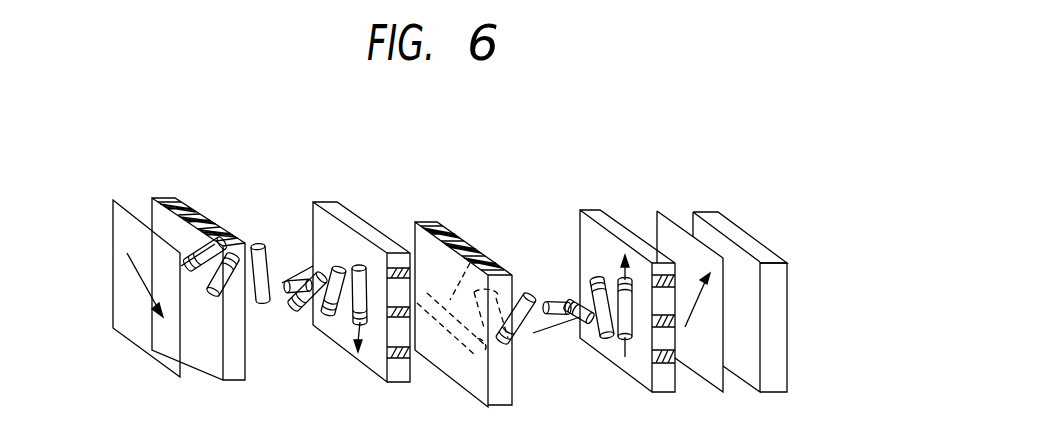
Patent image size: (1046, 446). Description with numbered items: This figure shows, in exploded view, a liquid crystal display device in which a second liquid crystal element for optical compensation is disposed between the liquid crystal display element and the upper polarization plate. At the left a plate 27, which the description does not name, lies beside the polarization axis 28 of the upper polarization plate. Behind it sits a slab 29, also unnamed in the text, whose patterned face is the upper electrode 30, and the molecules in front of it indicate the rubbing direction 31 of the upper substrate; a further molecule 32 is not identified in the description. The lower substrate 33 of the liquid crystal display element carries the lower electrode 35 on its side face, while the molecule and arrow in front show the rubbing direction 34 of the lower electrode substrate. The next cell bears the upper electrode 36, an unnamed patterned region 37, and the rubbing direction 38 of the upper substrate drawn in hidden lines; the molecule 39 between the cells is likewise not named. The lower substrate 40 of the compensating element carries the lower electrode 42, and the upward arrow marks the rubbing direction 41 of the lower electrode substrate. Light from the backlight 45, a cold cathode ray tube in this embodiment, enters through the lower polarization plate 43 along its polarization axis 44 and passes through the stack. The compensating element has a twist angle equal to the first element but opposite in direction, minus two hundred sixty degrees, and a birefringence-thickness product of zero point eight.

The polarizer 27 is at (123, 198).
The polarization axis of upper polarization plate 28 is at (139, 266).
The first liquid crystal cell 29 is at (187, 200).
The upper electrode of liquid crystal display element 30 is at (213, 222).
The rubbing direction of upper substrate 31 is at (233, 243).
The liquid crystal molecule 32 is at (273, 267).
The lower substrate of liquid crystal display element 33 is at (320, 200).
The rubbing direction of lower electrode substrate 34 is at (360, 253).
The lower electrode of liquid crystal display element 35 is at (395, 247).
The upper electrode of liquid crystal display element 36 is at (428, 220).
The cell partitions 37 is at (455, 237).
The rubbing direction of upper substrate 38 is at (480, 250).
The liquid crystal molecule 39 is at (550, 300).
The lower substrate of liquid crystal display element 40 is at (590, 213).
The rubbing direction of lower electrode substrate 41 is at (615, 267).
The lower electrode of liquid crystal display element 42 is at (667, 270).
The lower polarization plate 43 is at (682, 280).
The polarization axis of lower polarization plate 44 is at (730, 227).
The backlight 45 is at (763, 240).